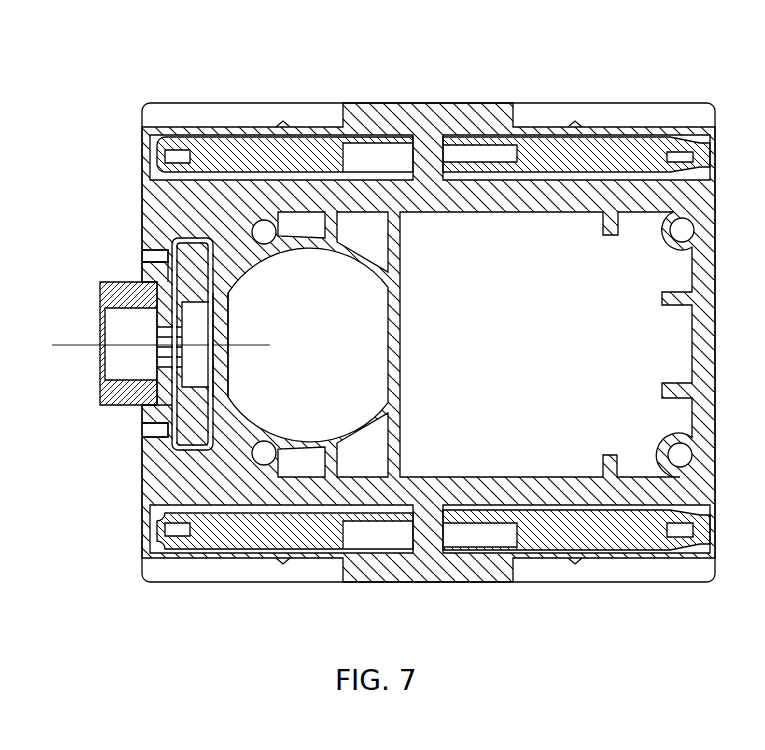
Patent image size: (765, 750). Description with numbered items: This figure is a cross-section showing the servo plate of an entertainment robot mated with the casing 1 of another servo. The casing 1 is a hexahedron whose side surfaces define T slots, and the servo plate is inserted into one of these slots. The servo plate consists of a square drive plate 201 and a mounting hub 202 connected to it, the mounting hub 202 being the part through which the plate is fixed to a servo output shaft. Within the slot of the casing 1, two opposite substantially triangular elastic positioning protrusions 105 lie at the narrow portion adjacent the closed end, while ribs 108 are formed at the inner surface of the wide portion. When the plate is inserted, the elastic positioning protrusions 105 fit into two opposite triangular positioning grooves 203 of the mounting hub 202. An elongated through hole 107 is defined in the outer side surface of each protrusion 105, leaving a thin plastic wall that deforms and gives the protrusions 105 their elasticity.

The casing 1 is at (412, 125).
The elastic positioning protrusion 105 is at (150, 268).
The elongated through hole 107 is at (150, 252).
The rib 108 is at (228, 393).
The drive plate 201 is at (205, 262).
The mounting hub 202 is at (100, 288).
The positioning groove 203 is at (138, 405).